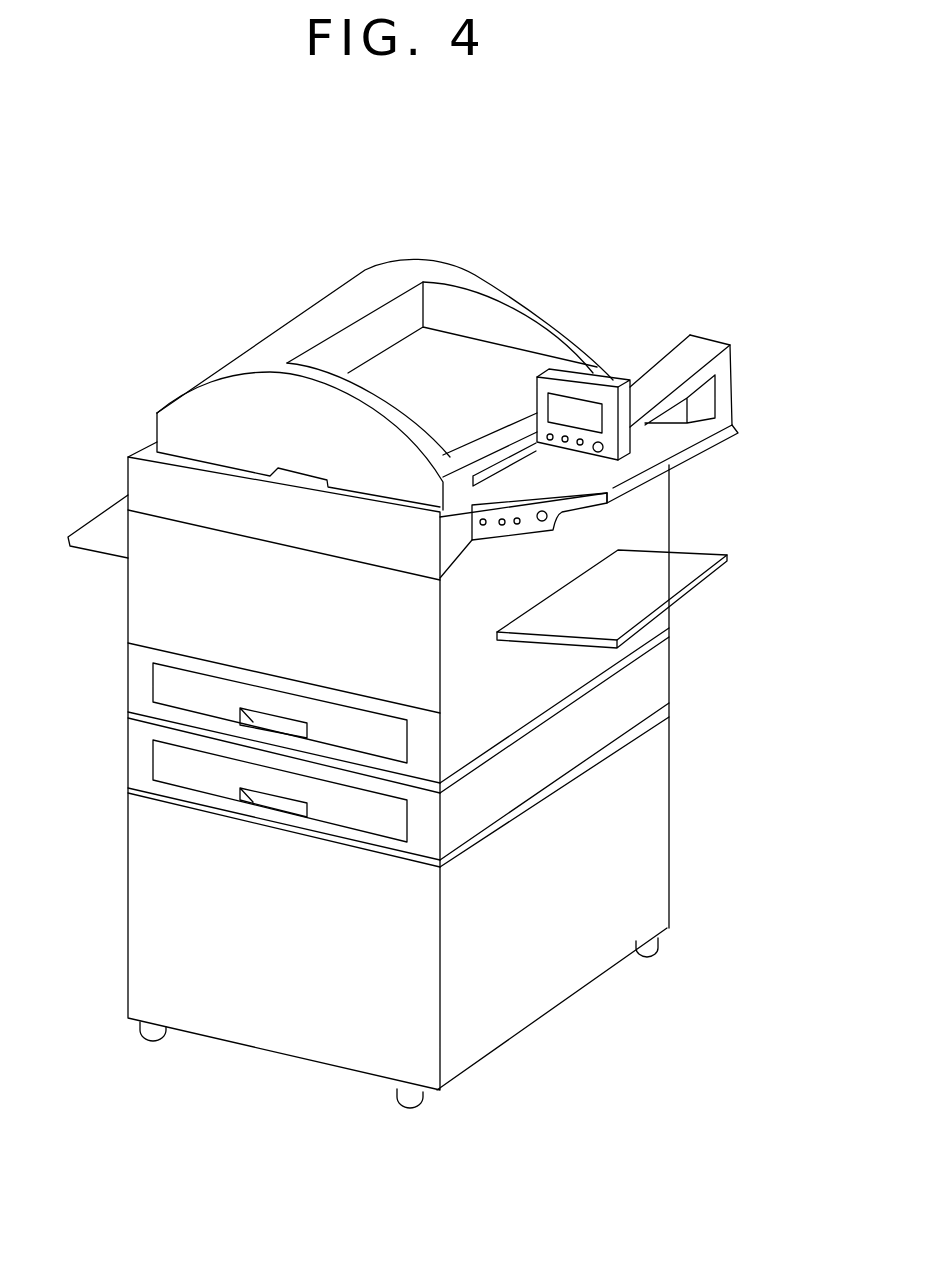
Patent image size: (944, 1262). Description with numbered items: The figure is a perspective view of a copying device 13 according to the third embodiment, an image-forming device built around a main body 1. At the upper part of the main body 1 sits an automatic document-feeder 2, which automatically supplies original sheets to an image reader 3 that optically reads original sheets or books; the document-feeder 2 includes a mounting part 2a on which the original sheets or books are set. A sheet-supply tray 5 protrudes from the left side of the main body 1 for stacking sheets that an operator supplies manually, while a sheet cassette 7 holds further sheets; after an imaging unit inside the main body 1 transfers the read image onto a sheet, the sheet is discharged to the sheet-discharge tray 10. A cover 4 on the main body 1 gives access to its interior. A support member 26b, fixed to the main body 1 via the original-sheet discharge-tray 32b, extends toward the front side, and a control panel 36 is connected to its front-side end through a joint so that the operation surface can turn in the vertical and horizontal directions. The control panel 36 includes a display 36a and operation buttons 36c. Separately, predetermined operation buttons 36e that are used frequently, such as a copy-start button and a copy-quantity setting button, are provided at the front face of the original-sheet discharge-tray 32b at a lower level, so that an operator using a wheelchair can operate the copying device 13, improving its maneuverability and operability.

The main body 1 is at (671, 395).
The automatic document-feeder 2 is at (385, 354).
The mounting part 2a is at (448, 343).
The image reader 3 is at (140, 485).
The cover 4 is at (145, 618).
The sheet-supply tray 5 is at (110, 527).
The sheet cassette 7 is at (163, 685).
The sheet-discharge tray 10 is at (688, 572).
The copying device 13 is at (336, 319).
The support member 26b is at (720, 367).
The original-sheet discharge-tray 32b is at (682, 432).
The control panel 36 is at (645, 406).
The display 36a is at (562, 403).
The operation buttons 36c is at (579, 447).
The predetermined operation buttons 36e is at (518, 524).